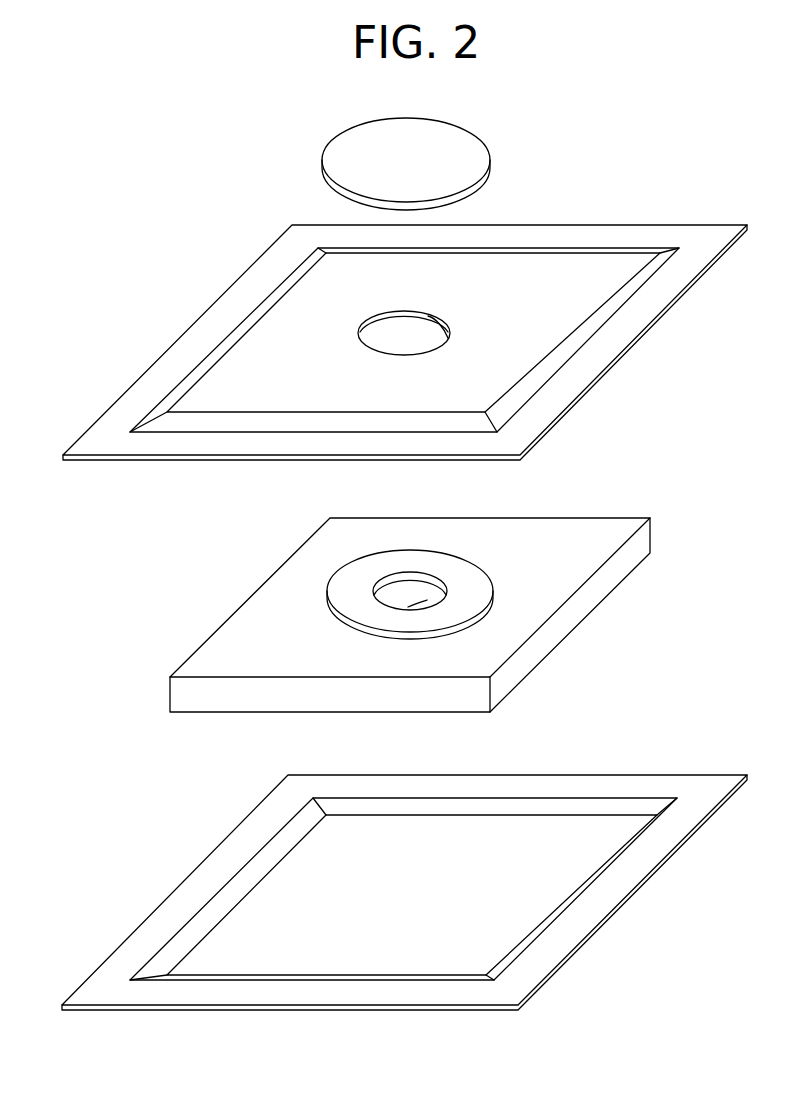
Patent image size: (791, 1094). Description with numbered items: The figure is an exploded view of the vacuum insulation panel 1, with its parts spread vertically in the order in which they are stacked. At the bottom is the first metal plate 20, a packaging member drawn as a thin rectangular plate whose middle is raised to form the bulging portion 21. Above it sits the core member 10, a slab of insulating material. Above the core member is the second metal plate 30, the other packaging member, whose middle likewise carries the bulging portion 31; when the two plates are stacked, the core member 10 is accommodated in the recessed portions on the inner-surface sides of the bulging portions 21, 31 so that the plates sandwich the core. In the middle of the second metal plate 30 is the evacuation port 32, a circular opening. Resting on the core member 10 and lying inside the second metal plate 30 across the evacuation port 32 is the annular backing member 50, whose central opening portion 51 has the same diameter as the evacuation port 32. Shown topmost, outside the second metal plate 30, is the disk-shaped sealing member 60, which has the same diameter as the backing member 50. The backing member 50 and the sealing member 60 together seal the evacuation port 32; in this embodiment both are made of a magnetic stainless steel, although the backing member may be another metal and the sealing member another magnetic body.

The vacuum insulation panel 1 is at (397, 514).
The core member 10 is at (398, 615).
The first metal plate 20 is at (397, 892).
The bulging portion 21 is at (622, 960).
The second metal plate 30 is at (397, 342).
The bulging portion 31 is at (622, 412).
The evacuation port 32 is at (680, 356).
The backing member 50 is at (494, 614).
The opening portion 51 is at (502, 625).
The sealing member 60 is at (530, 133).